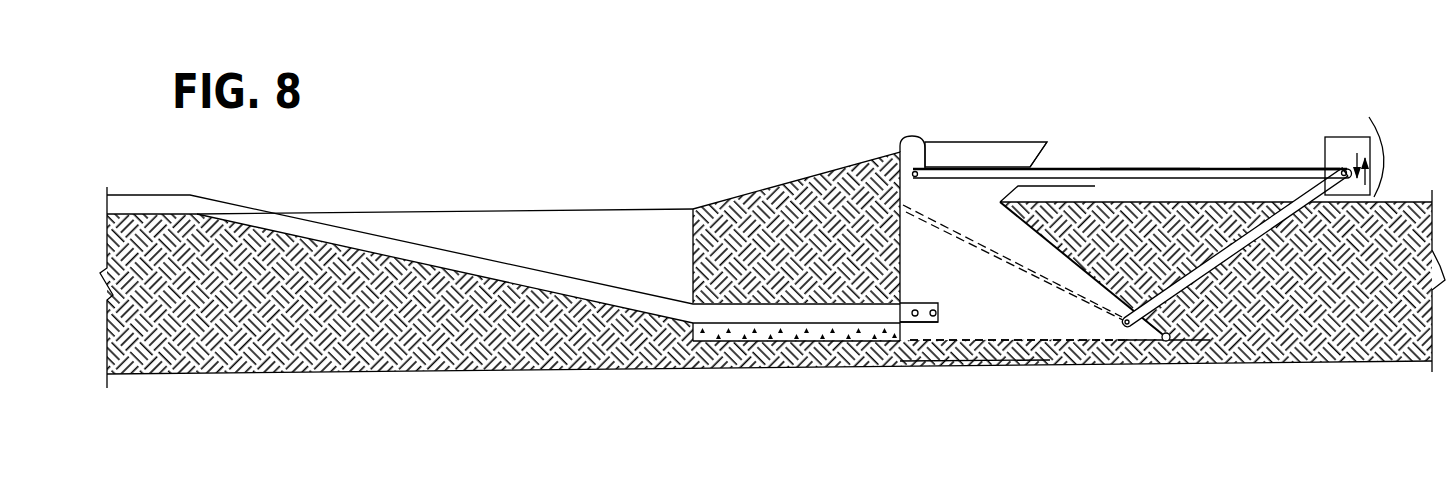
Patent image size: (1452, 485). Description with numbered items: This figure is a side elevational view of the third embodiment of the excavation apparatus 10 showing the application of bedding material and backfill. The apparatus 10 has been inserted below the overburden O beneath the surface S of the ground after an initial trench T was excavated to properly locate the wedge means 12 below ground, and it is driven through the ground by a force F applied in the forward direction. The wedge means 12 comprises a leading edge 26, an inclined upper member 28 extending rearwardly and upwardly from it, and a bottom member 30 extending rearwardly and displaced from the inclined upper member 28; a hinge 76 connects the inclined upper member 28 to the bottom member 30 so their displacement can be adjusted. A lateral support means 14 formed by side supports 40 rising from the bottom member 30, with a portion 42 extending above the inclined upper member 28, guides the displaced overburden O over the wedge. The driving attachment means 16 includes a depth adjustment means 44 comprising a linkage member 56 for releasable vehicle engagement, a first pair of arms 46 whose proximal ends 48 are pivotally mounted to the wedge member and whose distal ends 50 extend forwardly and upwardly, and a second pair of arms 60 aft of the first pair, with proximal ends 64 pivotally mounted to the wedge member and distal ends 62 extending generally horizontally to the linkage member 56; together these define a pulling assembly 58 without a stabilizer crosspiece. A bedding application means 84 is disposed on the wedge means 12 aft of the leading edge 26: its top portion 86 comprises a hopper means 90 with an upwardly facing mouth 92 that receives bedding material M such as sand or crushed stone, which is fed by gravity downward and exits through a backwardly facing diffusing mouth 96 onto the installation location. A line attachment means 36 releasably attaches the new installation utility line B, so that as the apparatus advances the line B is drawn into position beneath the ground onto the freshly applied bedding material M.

The excavation apparatus 10 is at (890, 28).
The wedge means 12 is at (1070, 354).
The lateral support means 14 is at (1077, 228).
The driving attachment means 16 is at (1184, 142).
The leading edge 26 is at (1230, 362).
The inclined upper member 28 is at (1027, 275).
The bottom member 30 is at (983, 362).
The line attachment means 36 is at (916, 330).
The side supports 40 is at (963, 323).
The portion of side support 42 is at (1077, 274).
The depth adjustment means 44 is at (1305, 144).
The first pair of arms 46 is at (1272, 220).
The proximal ends of arms 48 is at (1140, 316).
The distal ends of arms 50 is at (1345, 176).
The linkage member 56 is at (1350, 140).
The pulling assembly 58 is at (1346, 102).
The second pair of arms 60 is at (1155, 170).
The distal ends of second arms 62 is at (1298, 170).
The proximal ends of second arms 64 is at (905, 145).
The hinge 76 is at (1168, 340).
The bedding application means 84 is at (983, 122).
The top portion 86 is at (1027, 140).
The hopper means 90 is at (1055, 152).
The upwardly facing mouth 92 is at (938, 147).
The backwardly facing diffusing mouth 96 is at (898, 336).
The initial trench T is at (480, 225).
The installation utility line B is at (535, 268).
The bedding material M is at (705, 336).
The overburden O is at (1108, 244).
The surface of the ground S is at (1392, 198).
The force F is at (1447, 113).